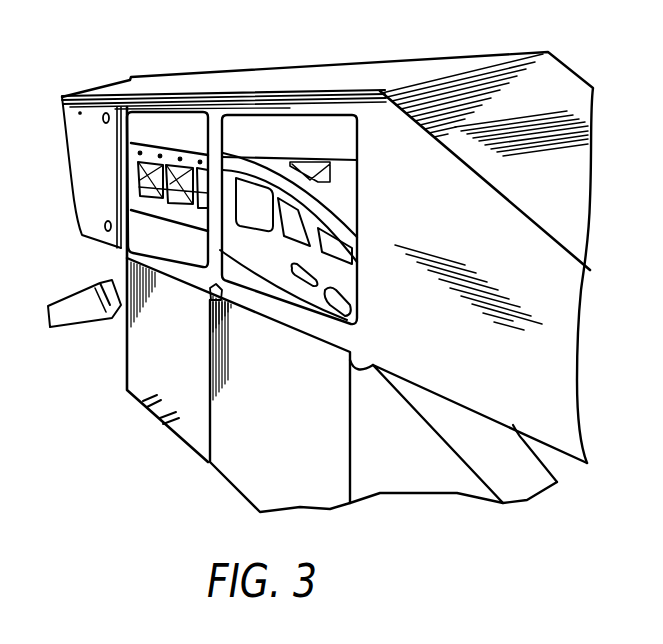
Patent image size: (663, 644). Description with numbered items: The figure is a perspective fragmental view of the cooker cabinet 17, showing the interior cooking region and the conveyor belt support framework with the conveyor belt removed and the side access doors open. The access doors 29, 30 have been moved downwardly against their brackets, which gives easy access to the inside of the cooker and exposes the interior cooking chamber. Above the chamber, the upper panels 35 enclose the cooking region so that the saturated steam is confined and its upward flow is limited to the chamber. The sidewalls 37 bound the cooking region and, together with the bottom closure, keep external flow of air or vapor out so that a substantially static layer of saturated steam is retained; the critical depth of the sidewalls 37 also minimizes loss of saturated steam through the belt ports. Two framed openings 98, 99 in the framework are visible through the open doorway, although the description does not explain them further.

The cooker cabinet 17 is at (572, 69).
The access door 29 is at (135, 363).
The access door 30 is at (250, 484).
The upper panels 35 is at (293, 76).
The sidewalls 37 is at (372, 107).
The first panel opening 98 is at (163, 123).
The second panel opening 99 is at (264, 137).